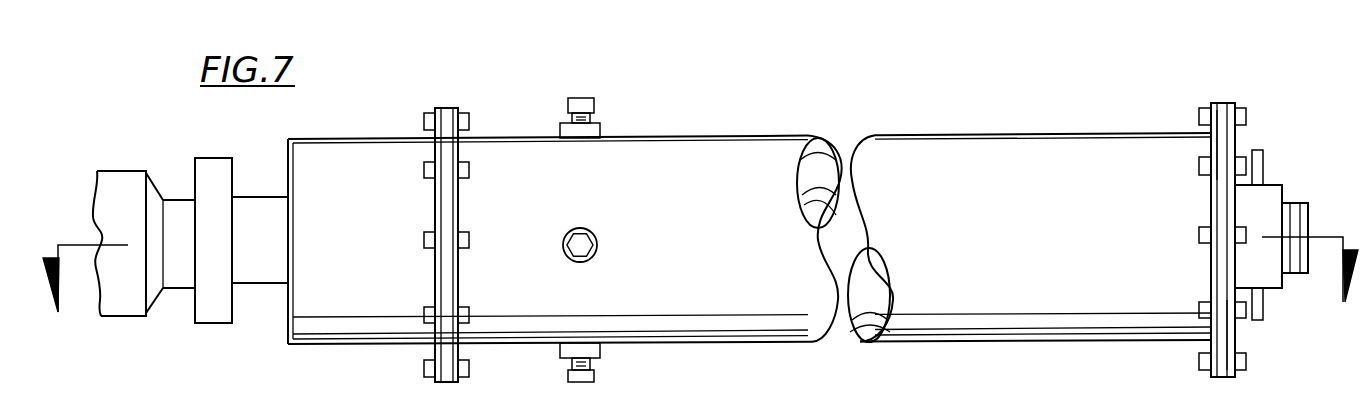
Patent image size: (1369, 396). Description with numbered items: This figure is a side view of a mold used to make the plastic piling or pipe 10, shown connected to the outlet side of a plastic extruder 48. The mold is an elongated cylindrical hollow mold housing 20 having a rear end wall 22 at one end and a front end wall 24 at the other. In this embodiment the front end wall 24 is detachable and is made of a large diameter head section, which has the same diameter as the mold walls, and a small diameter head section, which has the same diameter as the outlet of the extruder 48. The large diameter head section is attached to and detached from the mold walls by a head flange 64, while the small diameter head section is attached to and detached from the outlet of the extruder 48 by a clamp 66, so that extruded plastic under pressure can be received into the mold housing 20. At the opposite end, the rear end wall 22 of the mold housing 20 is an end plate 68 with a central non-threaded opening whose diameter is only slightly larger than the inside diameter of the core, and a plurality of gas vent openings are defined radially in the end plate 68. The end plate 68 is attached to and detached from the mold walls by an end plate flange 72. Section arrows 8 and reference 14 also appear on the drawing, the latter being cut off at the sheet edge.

The section line 8- 8 is at (700, 259).
The plastic piling or pipe 10 is at (828, 369).
The hub 14 is at (1271, 273).
The mold housing 20 is at (707, 137).
The rear end wall 22 is at (1232, 142).
The front end wall 24 is at (333, 152).
The extruder 48 is at (165, 310).
The head flange 64 is at (451, 98).
The clamp 66 is at (213, 163).
The end plate 68 is at (1227, 343).
The end plate flange 72 is at (1225, 92).